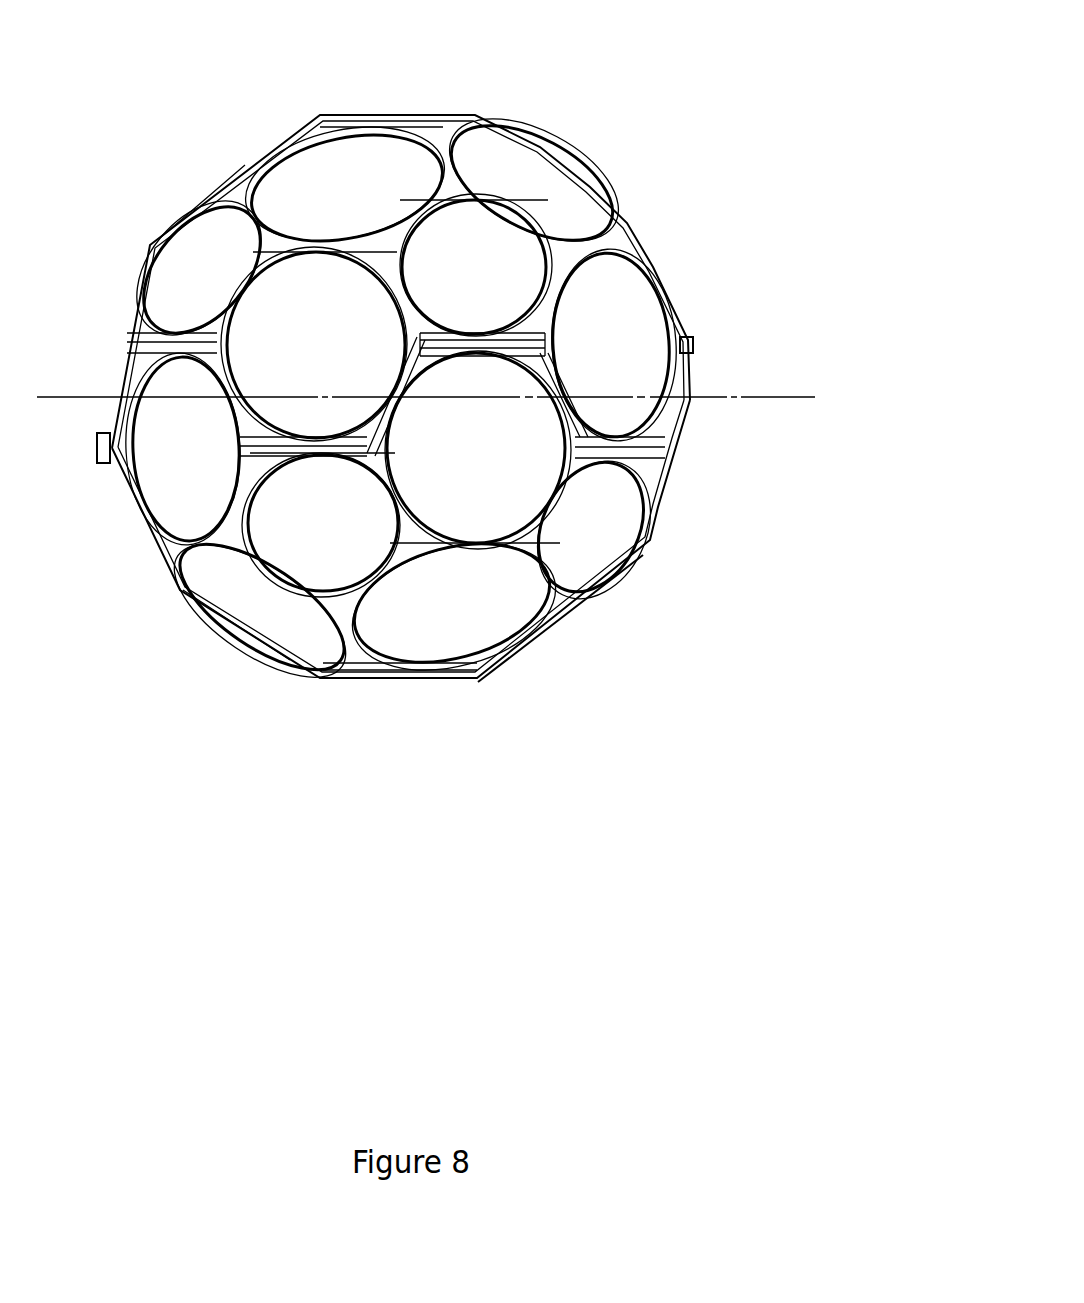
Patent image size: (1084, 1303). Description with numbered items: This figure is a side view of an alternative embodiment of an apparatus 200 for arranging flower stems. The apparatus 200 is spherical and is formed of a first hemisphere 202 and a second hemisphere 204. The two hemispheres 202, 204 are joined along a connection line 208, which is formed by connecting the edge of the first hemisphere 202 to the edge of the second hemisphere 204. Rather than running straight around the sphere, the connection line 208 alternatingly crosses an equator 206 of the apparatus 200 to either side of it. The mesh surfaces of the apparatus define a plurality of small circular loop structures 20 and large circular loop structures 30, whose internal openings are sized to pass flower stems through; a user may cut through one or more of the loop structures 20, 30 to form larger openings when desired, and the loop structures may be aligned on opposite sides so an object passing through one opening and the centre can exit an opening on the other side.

The small circular loop structure 20 is at (447, 197).
The large circular loop structure 30 is at (265, 150).
The apparatus 200 is at (461, 359).
The first hemisphere 202 is at (623, 217).
The second hemisphere 204 is at (620, 573).
The equator 206 is at (743, 398).
The connection line 208 is at (717, 342).